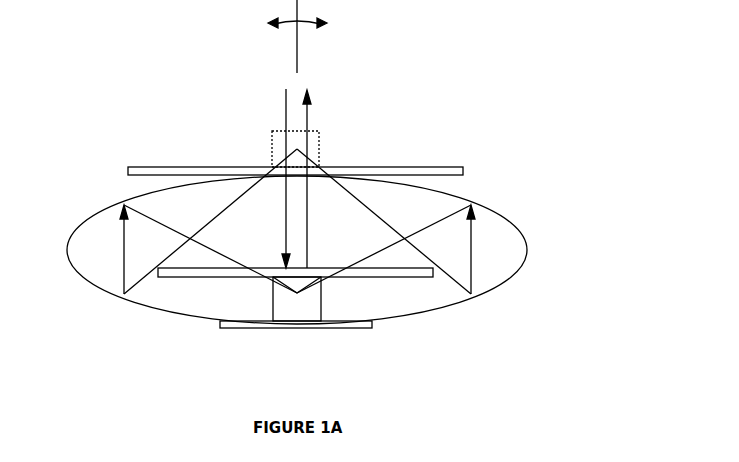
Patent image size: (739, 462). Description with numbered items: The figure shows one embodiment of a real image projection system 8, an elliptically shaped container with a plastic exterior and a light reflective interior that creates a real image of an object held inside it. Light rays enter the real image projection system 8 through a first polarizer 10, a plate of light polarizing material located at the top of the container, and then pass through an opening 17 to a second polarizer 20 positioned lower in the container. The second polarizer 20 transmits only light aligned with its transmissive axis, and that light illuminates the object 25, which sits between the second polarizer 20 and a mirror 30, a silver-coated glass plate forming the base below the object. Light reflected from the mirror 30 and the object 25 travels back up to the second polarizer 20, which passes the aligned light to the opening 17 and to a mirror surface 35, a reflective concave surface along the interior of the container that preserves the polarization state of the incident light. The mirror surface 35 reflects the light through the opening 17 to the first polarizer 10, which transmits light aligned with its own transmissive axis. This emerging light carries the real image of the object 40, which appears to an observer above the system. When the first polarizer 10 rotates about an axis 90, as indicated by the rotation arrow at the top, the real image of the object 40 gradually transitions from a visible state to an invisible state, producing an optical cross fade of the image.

The real image projection system 8 is at (548, 206).
The first polarizer 10 is at (140, 167).
The opening 17 is at (278, 187).
The second polarizer 20 is at (150, 265).
The object 25 is at (323, 303).
The mirror 30 is at (220, 323).
The mirror surface 35 is at (467, 193).
The real image of the object 40 is at (307, 125).
The axis 90 is at (295, 28).